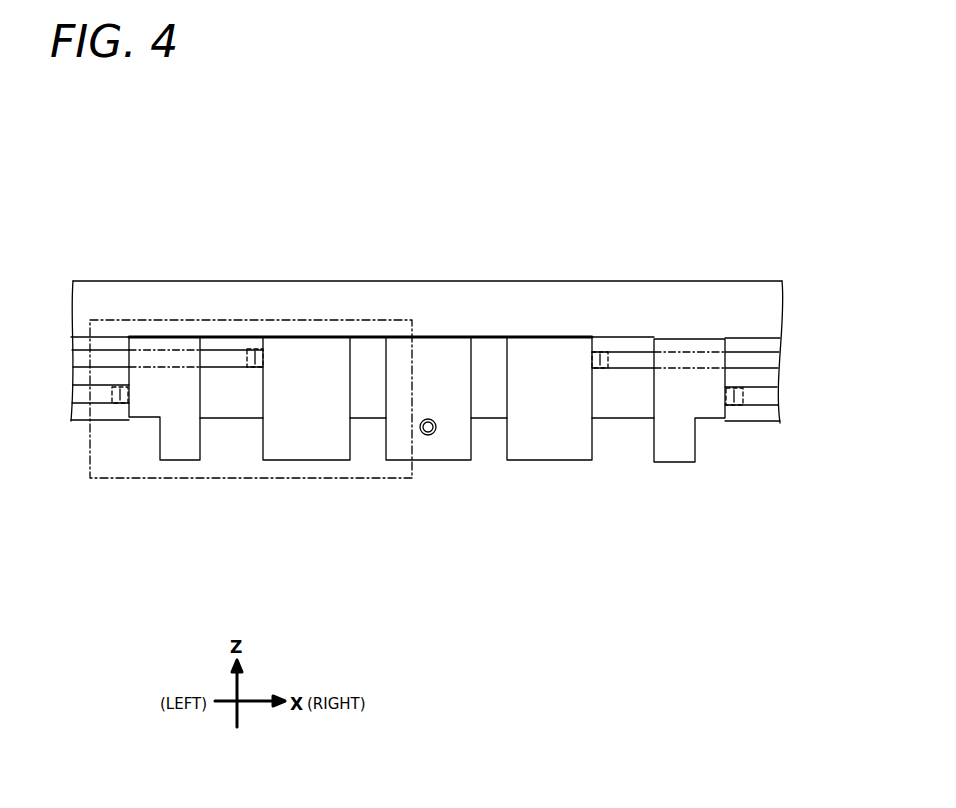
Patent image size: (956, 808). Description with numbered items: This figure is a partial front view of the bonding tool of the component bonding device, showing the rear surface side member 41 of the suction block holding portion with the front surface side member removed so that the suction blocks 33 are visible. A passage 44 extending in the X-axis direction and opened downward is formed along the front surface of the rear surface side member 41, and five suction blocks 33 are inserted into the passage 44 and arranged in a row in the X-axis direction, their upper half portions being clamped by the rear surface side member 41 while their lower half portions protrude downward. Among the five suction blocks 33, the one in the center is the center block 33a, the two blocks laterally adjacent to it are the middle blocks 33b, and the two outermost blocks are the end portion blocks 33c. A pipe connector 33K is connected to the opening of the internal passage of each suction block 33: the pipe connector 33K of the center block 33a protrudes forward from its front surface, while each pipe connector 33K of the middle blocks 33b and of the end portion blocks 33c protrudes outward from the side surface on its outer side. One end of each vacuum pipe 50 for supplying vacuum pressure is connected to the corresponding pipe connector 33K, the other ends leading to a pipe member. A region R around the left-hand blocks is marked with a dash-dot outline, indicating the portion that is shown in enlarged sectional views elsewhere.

The rear surface side member 41 is at (506, 292).
The passage 44 is at (452, 404).
The vacuum pipe 50 is at (105, 388).
The suction block 33 is at (441, 469).
The center block 33a is at (455, 452).
The middle block 33b is at (308, 452).
The end portion block 33c is at (182, 452).
The pipe connector 33K is at (256, 346).
The region R is at (319, 305).